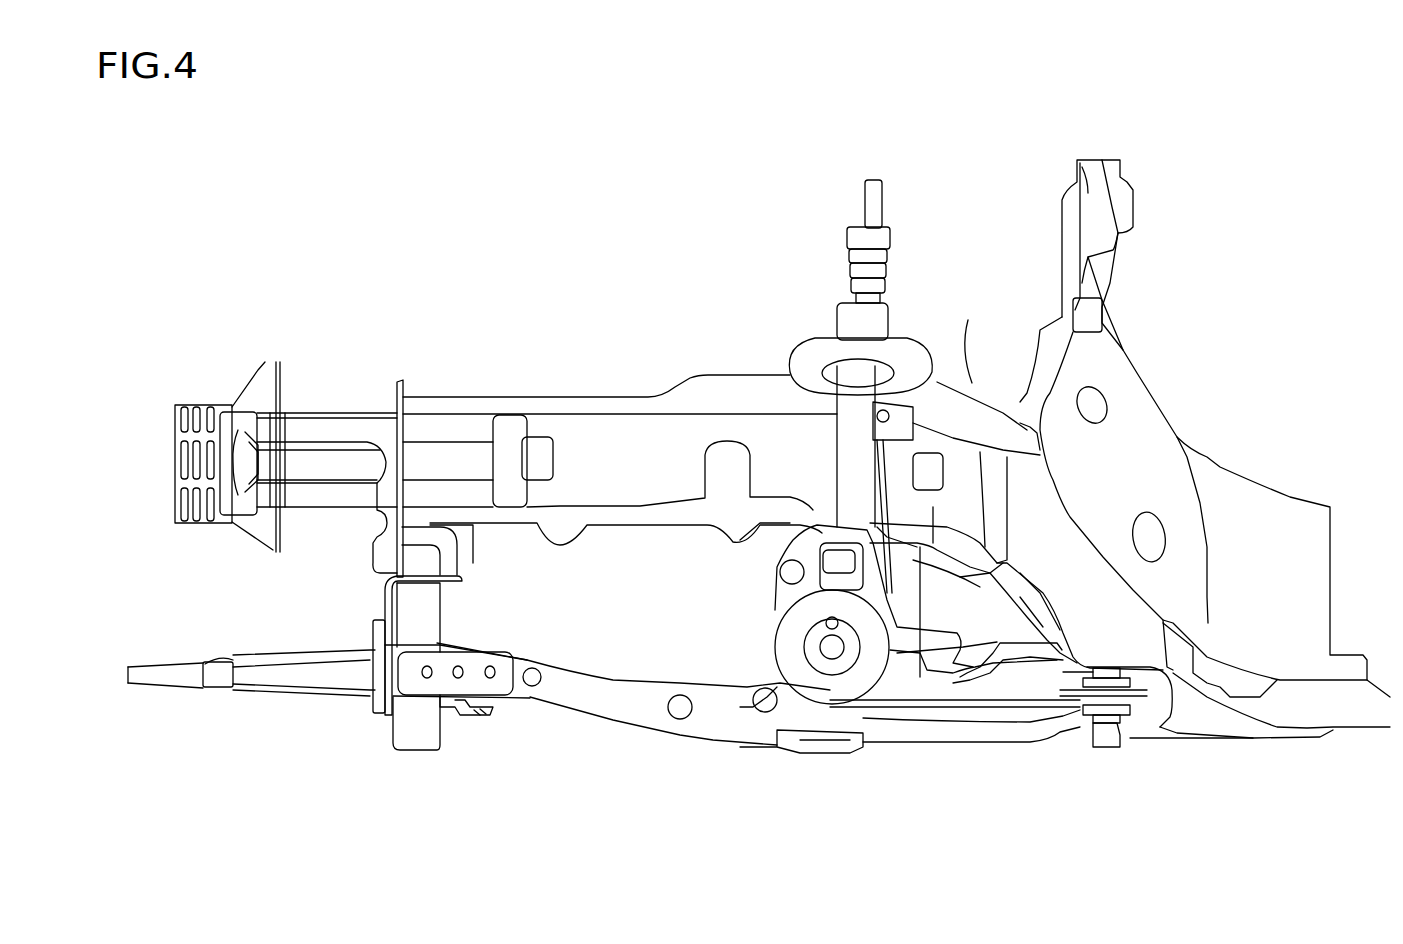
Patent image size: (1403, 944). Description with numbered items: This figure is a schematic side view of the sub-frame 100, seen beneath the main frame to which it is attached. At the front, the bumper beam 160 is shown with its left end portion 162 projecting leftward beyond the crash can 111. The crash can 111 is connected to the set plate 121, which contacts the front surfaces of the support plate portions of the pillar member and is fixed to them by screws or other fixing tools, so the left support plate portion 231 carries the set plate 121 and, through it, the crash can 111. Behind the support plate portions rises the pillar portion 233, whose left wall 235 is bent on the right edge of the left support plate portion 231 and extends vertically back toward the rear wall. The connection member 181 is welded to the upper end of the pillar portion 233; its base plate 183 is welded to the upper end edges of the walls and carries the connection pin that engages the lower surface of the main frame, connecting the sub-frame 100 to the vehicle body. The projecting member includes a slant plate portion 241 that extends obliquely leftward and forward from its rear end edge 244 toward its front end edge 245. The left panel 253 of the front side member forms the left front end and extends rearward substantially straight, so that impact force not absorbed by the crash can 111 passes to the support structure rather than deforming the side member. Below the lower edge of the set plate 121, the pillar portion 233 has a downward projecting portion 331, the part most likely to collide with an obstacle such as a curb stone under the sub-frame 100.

The sub-frame 100 is at (718, 504).
The crash can 111 is at (328, 690).
The set plate 121 is at (373, 638).
The bumper beam 160 is at (211, 682).
The left end portion 162 is at (163, 683).
The connection member 181 is at (783, 526).
The base plate 183 is at (462, 572).
The left support plate portion 231 is at (372, 625).
The pillar portion 233 is at (489, 616).
The left wall 235 is at (425, 622).
The slant plate portion 241 is at (447, 683).
The rear end edge 244 is at (533, 687).
The front end edge 245 is at (380, 672).
The left panel 253 is at (613, 708).
The downward projecting portion 331 is at (418, 738).